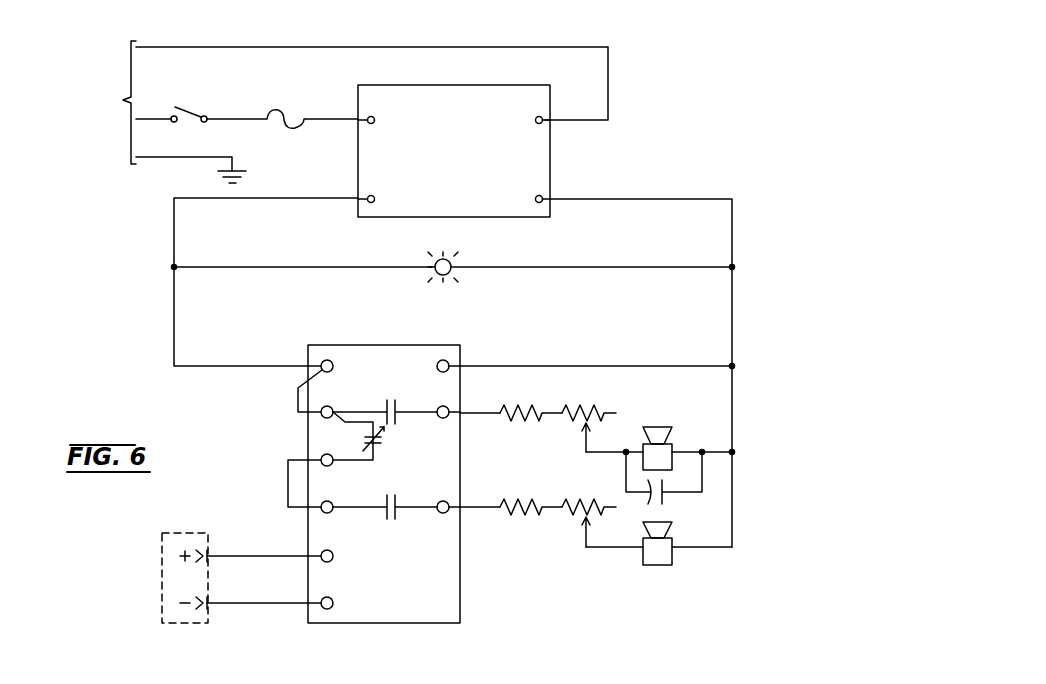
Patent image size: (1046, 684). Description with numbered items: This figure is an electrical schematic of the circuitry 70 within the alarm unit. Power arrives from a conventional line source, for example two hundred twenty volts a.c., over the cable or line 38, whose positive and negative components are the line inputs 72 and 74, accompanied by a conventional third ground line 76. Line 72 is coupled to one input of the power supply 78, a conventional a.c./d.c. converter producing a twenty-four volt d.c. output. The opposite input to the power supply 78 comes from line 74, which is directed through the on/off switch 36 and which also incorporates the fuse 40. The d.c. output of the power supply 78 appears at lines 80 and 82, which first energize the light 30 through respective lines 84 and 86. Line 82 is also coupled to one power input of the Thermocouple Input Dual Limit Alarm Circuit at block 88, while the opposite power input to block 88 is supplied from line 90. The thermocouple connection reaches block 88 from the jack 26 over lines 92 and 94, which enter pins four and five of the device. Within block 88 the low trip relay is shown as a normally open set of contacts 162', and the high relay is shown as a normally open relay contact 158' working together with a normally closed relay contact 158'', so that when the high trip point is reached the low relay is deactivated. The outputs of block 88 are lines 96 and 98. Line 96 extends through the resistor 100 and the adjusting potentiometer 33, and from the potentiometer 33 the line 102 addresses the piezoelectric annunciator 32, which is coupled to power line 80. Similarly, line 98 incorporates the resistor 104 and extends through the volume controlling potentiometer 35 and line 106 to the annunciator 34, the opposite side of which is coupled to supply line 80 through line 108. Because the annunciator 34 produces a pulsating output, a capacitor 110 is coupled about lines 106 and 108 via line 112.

The jack 26 is at (200, 533).
The light 30 is at (452, 275).
The annunciator 32 is at (652, 565).
The adjusting potentiometer 33 is at (603, 506).
The annunciator 34 is at (656, 427).
The volume controlling potentiometer 35 is at (637, 391).
The on/off switch 36 is at (196, 112).
The line 38 is at (127, 175).
The fuse 40 is at (281, 124).
The circuitry 70 is at (702, 52).
The line input 72 is at (175, 47).
The line input 74 is at (148, 119).
The ground line 76 is at (150, 157).
The power supply 78 is at (551, 165).
The line 80 is at (630, 199).
The line 82 is at (260, 198).
The line 84 is at (573, 267).
The line 86 is at (300, 267).
The Thermocouple Input Dual Limit Alarm Circuit 88 is at (440, 345).
The line 90 is at (573, 366).
The line 92 is at (245, 556).
The line 94 is at (245, 603).
The line 96 is at (475, 507).
The line 98 is at (475, 413).
The resistor 100 is at (522, 507).
The line 102 is at (600, 547).
The resistor 104 is at (512, 413).
The line 106 is at (583, 444).
The line 108 is at (680, 452).
The capacitor 110 is at (665, 500).
The line 112 is at (703, 475).
The normally open relay contact 158' is at (385, 398).
The normally closed relay contact 158'' is at (406, 437).
The normally open set of contacts 162' is at (385, 493).